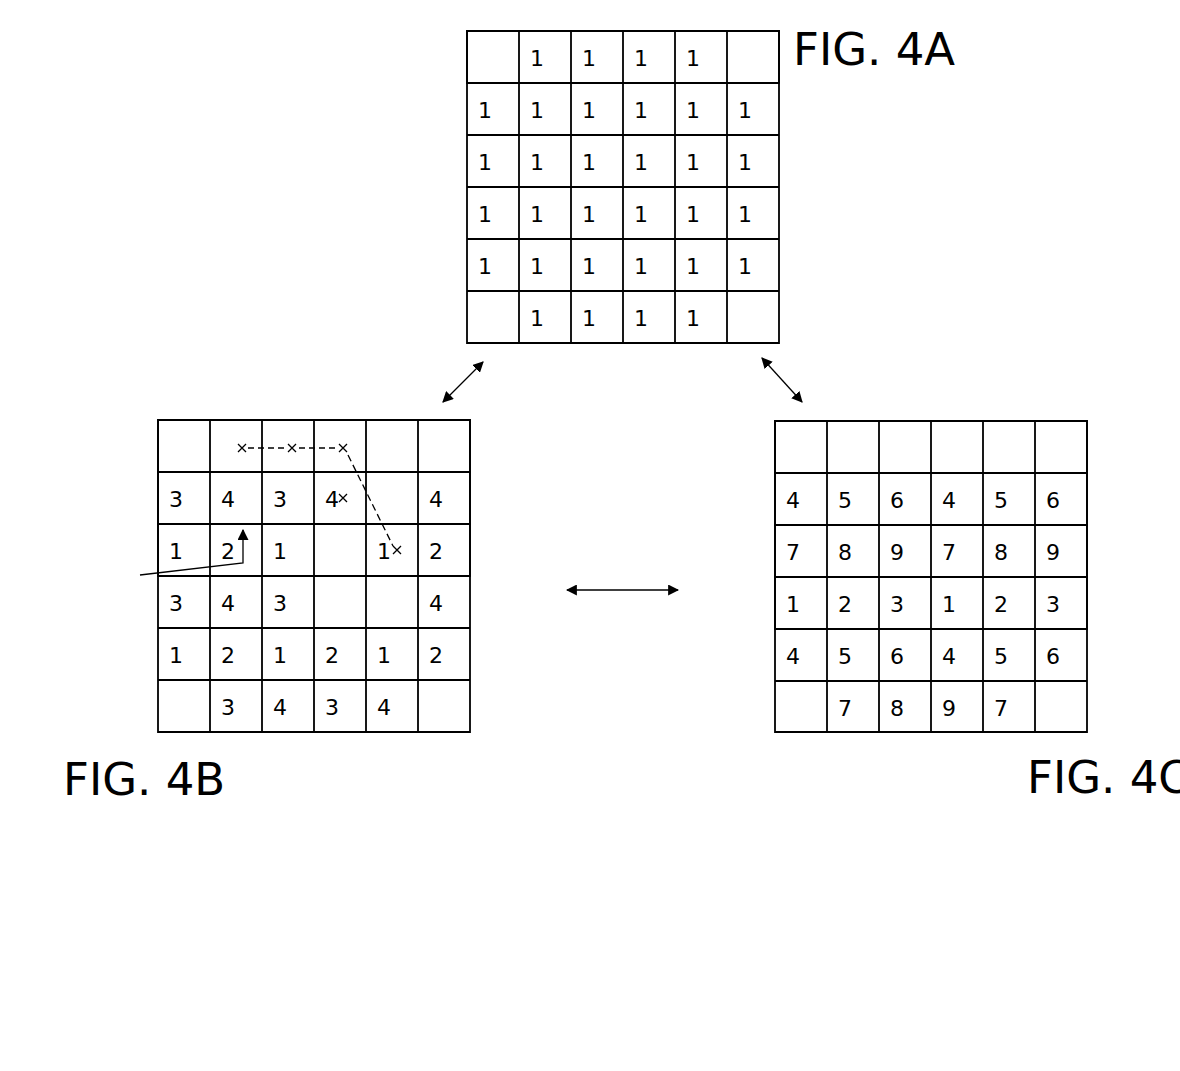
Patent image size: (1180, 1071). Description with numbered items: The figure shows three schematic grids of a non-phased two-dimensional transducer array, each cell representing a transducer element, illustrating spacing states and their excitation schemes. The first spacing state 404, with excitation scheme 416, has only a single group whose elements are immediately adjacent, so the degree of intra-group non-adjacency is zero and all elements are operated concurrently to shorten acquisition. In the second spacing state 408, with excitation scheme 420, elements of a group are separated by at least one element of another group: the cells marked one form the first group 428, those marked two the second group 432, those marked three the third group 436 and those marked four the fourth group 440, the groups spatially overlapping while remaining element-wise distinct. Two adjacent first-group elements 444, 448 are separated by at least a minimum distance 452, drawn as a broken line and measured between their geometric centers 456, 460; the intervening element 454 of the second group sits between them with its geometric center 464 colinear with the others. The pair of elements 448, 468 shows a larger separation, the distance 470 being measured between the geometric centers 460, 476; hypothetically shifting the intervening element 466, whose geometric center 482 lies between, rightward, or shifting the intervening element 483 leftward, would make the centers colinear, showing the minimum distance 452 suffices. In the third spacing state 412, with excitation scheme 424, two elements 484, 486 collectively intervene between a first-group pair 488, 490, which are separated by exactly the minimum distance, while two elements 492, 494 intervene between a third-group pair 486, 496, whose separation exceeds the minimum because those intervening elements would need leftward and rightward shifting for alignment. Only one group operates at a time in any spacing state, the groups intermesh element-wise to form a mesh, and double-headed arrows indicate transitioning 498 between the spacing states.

In FIG. 4A, the first spacing state 404 is at (827, 178).
In FIG. 4A, the excitation scheme 416 is at (413, 187).
In FIG. 4B, the second spacing state 408 is at (172, 373).
In FIG. 4B, the excitation scheme 420 is at (258, 325).
In FIG. 4C, the third spacing state 412 is at (1075, 370).
In FIG. 4C, the excitation scheme 424 is at (988, 322).
In FIG. 4B, the first group 428 is at (207, 448).
In FIG. 4B, the third group 436 is at (157, 503).
In FIG. 4B, the second group 432 is at (208, 542).
In FIG. 4B, the fourth group 440 is at (169, 560).
In FIG. 4B, the adjacent element of first group 444 is at (221, 427).
In FIG. 4B, the intervening element 454 is at (277, 427).
In FIG. 4B, the adjacent element of first group 448 is at (327, 427).
In FIG. 4B, the geometric center 456 is at (241, 443).
In FIG. 4B, the geometric center 464 is at (293, 443).
In FIG. 4B, the geometric center 460 is at (344, 443).
In FIG. 4B, the minimum distance 452 is at (268, 450).
In FIG. 4B, the distance 470 is at (357, 465).
In FIG. 4B, the intervening element 483 is at (407, 482).
In FIG. 4B, the geometric center 482 is at (349, 502).
In FIG. 4B, the intervening element 466 is at (348, 520).
In FIG. 4B, the geometric center 476 is at (399, 554).
In FIG. 4B, the element 468 is at (387, 571).
In FIG. 4B, the transitioning 498 is at (560, 476).
In FIG. 4C, the transitioning 498 is at (762, 380).
In FIG. 4C, the element of pair 488 is at (865, 432).
In FIG. 4C, the intervening element 484 is at (920, 432).
In FIG. 4C, the intervening element 486 is at (970, 432).
In FIG. 4C, the element of pair 490 is at (1025, 432).
In FIG. 4C, the intervening element 492 is at (968, 512).
In FIG. 4C, the intervening element 494 is at (915, 563).
In FIG. 4C, the element of pair 496 is at (915, 615).